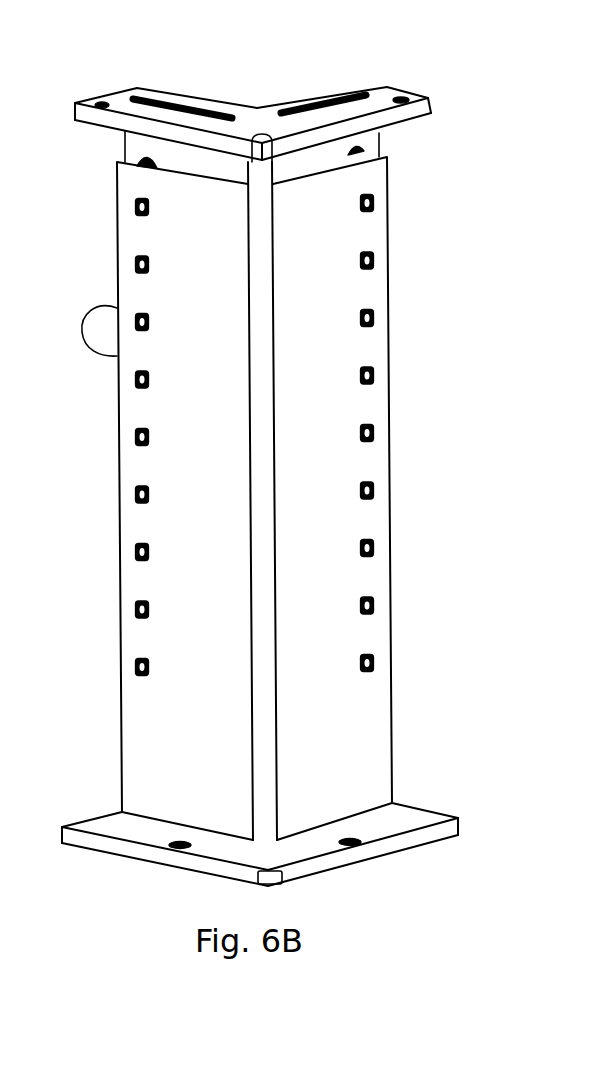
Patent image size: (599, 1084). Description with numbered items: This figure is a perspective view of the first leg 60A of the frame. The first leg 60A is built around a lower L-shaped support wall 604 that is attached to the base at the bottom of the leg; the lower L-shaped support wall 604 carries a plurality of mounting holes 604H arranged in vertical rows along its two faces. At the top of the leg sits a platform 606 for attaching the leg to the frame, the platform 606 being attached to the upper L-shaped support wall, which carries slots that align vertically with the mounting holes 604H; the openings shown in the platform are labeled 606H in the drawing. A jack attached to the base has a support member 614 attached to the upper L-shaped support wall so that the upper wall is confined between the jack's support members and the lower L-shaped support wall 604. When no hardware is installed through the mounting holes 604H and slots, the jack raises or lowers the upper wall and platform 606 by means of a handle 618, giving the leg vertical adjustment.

The first leg 60A is at (492, 504).
The lower L-shaped support wall 604 is at (345, 485).
The mounting holes 604H is at (373, 368).
The platform 606 is at (319, 101).
The top plate slots 606H is at (347, 92).
The support member 614 is at (231, 826).
The handle 618 is at (110, 356).